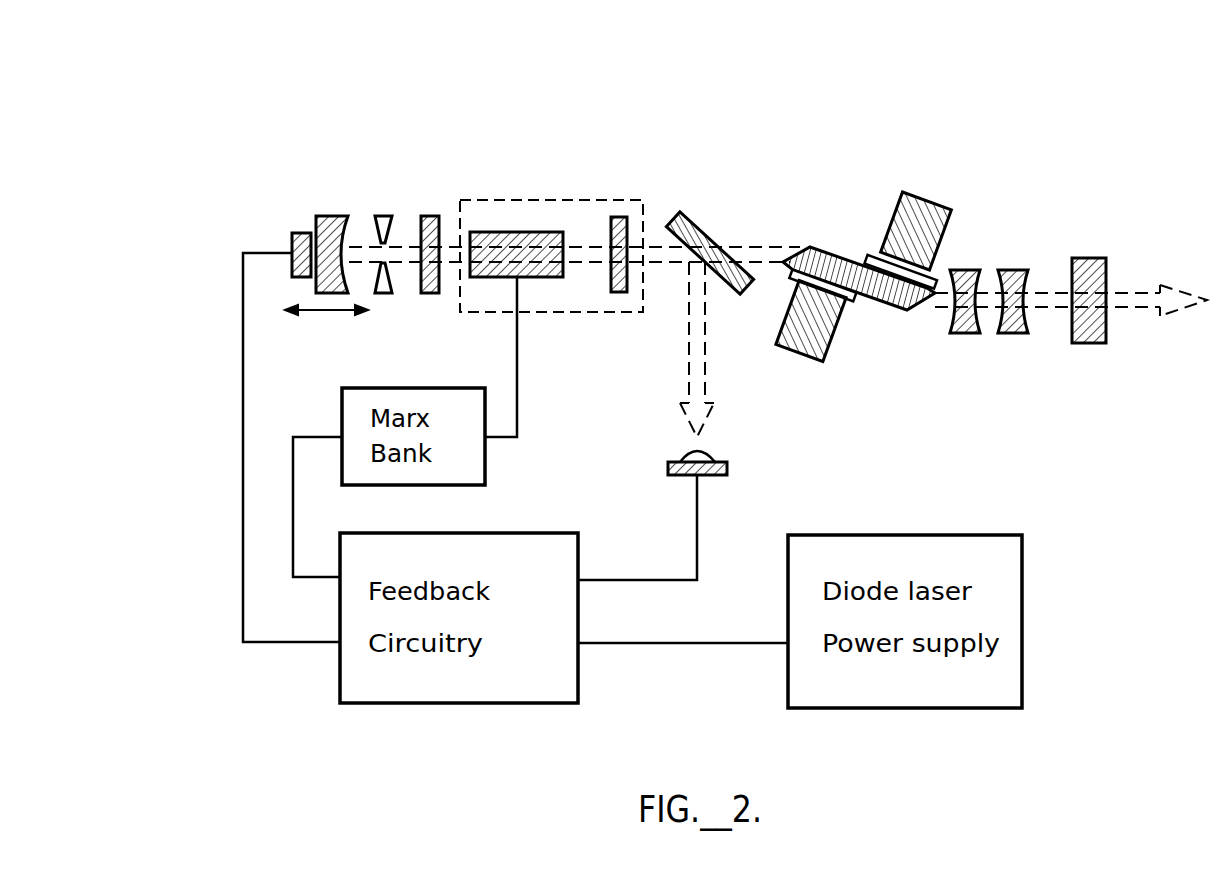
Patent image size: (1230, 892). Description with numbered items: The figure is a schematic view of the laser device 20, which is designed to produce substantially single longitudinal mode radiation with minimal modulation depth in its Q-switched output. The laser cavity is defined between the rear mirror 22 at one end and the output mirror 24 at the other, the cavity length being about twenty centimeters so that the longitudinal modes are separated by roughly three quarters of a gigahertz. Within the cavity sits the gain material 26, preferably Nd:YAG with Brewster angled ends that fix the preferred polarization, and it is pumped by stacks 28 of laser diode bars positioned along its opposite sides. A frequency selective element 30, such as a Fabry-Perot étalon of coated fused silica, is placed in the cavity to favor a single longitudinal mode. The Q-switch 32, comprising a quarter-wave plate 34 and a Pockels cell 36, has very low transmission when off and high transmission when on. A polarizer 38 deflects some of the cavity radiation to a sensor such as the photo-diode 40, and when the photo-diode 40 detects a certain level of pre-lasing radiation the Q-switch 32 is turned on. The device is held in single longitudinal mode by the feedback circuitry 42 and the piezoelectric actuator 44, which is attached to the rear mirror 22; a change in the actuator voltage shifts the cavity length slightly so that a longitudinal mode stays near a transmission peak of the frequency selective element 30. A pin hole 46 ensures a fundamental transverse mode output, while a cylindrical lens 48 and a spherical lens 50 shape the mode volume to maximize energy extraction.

The laser device 20 is at (688, 69).
The rear mirror 22 is at (329, 215).
The output mirror 24 is at (1087, 343).
The gain material 26 is at (840, 258).
The stacks of laser diode bars 28 is at (930, 196).
The frequency selective element 30 is at (428, 215).
The Q-switch 32 is at (543, 200).
The quarter-wave plate 34 is at (622, 217).
The Pockels cell 36 is at (500, 232).
The polarizer 38 is at (688, 220).
The photo-diode 40 is at (727, 465).
The feedback circuitry 42 is at (523, 703).
The piezoelectric actuator 44 is at (300, 233).
The pin hole 46 is at (383, 215).
The cylindrical lens 48 is at (967, 270).
The spherical lens 50 is at (1012, 270).